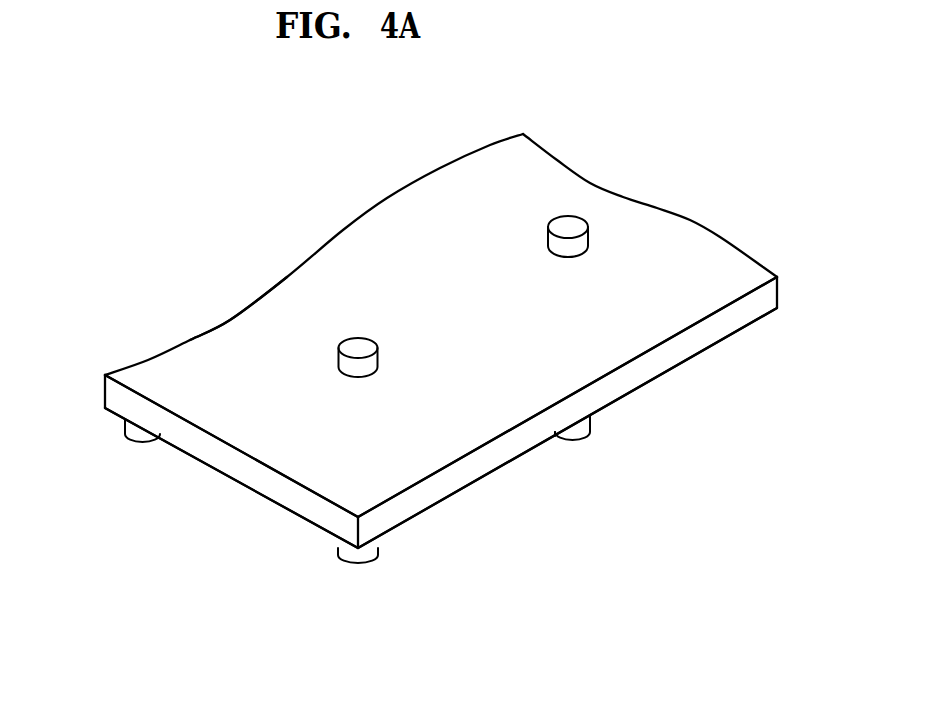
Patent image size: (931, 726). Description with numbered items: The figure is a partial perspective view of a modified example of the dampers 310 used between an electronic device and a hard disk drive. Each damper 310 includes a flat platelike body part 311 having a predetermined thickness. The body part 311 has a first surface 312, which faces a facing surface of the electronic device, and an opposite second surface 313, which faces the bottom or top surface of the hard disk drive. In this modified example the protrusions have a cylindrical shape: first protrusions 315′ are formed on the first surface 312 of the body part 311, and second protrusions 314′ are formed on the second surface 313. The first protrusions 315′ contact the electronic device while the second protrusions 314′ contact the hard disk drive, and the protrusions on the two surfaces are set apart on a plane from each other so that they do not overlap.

The damper 310 is at (162, 315).
The body part 311 is at (237, 465).
The first surface 312 is at (303, 520).
The second surface 313 is at (247, 429).
The second protrusions 314′ is at (367, 552).
The first protrusions 315′ is at (358, 347).